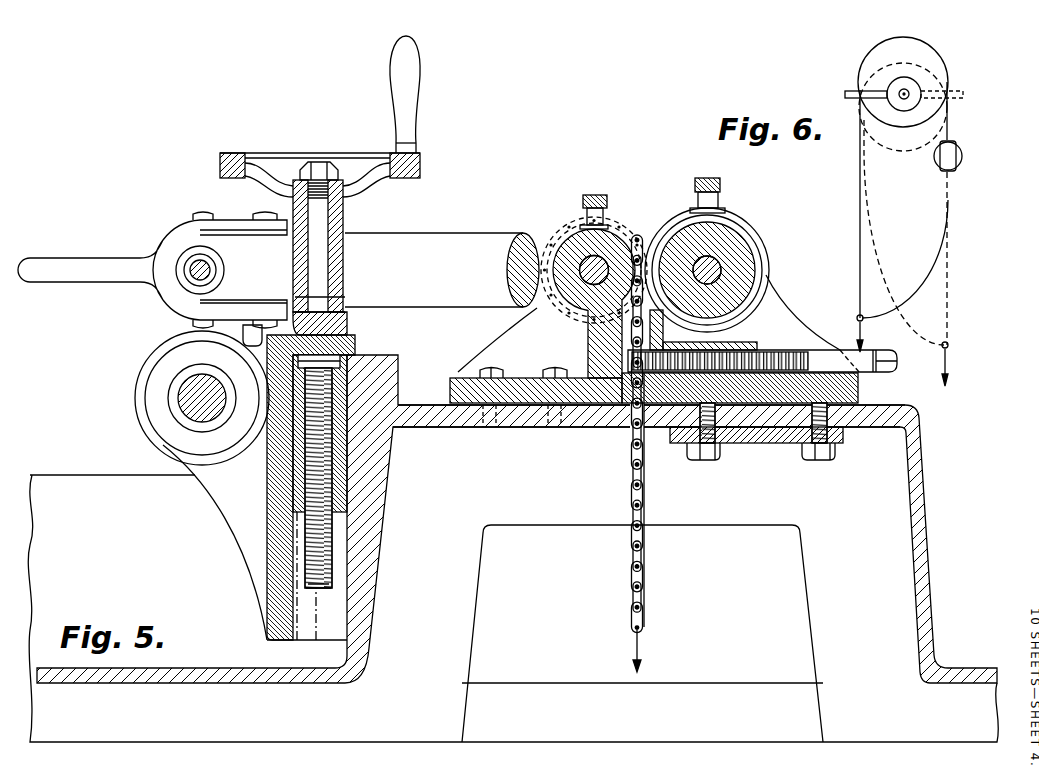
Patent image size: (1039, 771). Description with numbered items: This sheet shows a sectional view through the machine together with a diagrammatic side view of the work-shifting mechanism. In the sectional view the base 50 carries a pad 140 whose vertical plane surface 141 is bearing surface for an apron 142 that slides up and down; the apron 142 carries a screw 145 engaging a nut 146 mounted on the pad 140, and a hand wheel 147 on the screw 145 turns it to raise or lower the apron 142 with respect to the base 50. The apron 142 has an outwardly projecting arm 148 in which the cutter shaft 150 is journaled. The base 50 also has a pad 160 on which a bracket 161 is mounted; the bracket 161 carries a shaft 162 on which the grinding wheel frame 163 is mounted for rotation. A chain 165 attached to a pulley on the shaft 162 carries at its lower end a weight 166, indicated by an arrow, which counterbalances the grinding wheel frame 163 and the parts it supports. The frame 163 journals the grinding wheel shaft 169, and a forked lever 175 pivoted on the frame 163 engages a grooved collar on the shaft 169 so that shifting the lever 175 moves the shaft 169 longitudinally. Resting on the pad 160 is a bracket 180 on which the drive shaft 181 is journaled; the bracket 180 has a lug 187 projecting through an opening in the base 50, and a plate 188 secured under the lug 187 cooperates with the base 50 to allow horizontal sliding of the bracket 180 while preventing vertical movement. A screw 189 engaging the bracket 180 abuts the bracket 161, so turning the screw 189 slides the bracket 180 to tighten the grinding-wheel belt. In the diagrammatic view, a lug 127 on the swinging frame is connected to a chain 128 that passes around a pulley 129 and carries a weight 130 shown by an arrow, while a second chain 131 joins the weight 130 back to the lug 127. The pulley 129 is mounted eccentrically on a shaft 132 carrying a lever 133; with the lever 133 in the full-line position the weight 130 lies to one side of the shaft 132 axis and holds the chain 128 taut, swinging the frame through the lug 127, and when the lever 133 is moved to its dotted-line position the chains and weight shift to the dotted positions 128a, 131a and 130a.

In FIG. 5, the base 50 is at (380, 496).
In FIG. 5, the pad 140 is at (358, 366).
In FIG. 5, the vertical plane surface 141 is at (345, 553).
In FIG. 5, the apron 142 is at (275, 480).
In FIG. 5, the screw 145 is at (320, 588).
In FIG. 5, the nut 146 is at (332, 449).
In FIG. 5, the hand wheel 147 is at (220, 162).
In FIG. 5, the outwardly projecting arm 148 is at (150, 372).
In FIG. 5, the cutter shaft 150 is at (198, 400).
In FIG. 5, the pad 160 is at (445, 407).
In FIG. 5, the bracket 161 is at (500, 352).
In FIG. 5, the shaft 162 is at (598, 260).
In FIG. 5, the grinding wheel frame 163 is at (405, 233).
In FIG. 5, the chain 165 is at (578, 232).
In FIG. 5, the weight 166 is at (640, 648).
In FIG. 5, the grinding wheel shaft 169 is at (200, 268).
In FIG. 5, the forked lever 175 is at (35, 263).
In FIG. 5, the bracket 180 is at (764, 303).
In FIG. 5, the shaft 181 is at (715, 267).
In FIG. 5, the lug 187 is at (780, 422).
In FIG. 5, the plate 188 is at (840, 445).
In FIG. 5, the screw 189 is at (885, 369).
In FIG. 6, the lug 127 is at (962, 152).
In FIG. 6, the chain 128 is at (860, 140).
In FIG. 6, the shifted position of chain 128a is at (867, 206).
In FIG. 6, the pulley 129 is at (867, 62).
In FIG. 6, the weight 130 is at (864, 340).
In FIG. 6, the shifted position of weight 130a is at (947, 368).
In FIG. 6, the second chain 131 is at (937, 273).
In FIG. 6, the shifted position of second chain 131a is at (950, 240).
In FIG. 6, the shaft 132 is at (907, 93).
In FIG. 6, the lever 133 is at (845, 95).